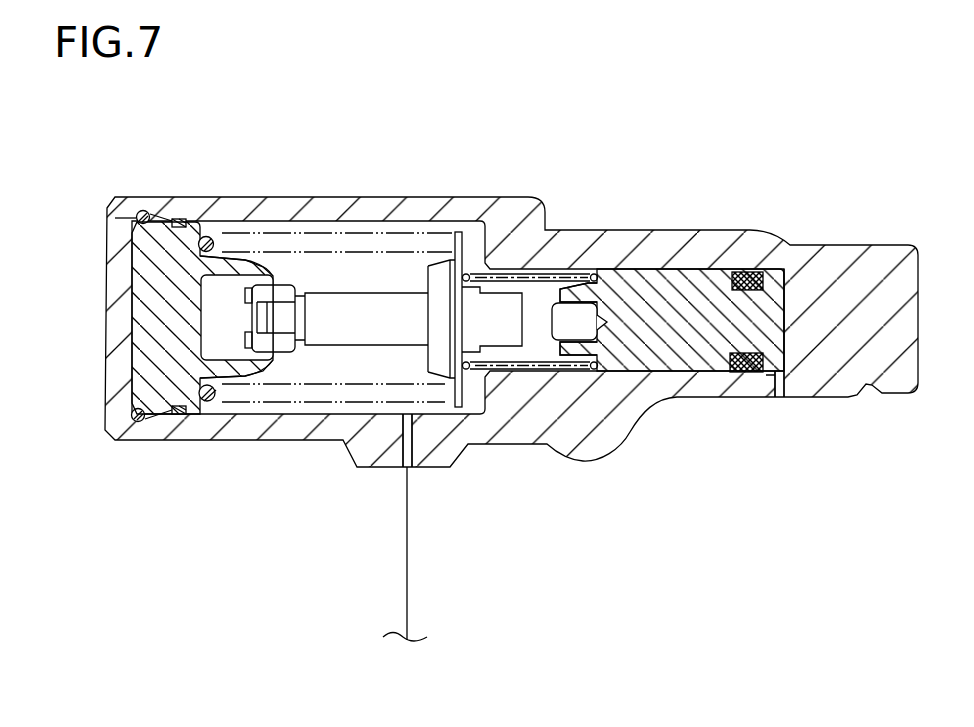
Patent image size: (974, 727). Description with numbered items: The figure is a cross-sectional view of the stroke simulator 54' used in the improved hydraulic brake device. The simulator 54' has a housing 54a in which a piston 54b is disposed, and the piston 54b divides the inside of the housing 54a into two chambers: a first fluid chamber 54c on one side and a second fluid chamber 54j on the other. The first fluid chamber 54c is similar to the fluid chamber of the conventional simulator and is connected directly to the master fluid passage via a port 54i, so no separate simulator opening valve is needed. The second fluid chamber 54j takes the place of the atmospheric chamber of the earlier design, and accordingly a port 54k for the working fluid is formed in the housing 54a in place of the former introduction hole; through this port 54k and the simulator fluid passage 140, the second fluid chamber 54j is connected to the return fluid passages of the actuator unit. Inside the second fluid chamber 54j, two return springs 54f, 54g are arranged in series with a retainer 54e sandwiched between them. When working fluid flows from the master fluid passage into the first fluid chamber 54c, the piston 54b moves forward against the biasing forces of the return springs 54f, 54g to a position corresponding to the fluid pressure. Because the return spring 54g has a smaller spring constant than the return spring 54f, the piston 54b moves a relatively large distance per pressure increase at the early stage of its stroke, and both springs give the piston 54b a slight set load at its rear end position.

The stroke simulator 54' is at (511, 275).
The housing 54a is at (583, 243).
The piston 54b is at (682, 280).
The first fluid chamber 54c is at (786, 324).
The retainer 54e is at (462, 262).
The return spring 54f is at (275, 250).
The return spring 54g is at (535, 280).
The port 54i is at (779, 385).
The second fluid chamber 54j is at (363, 273).
The port 54k is at (411, 468).
The simulator fluid passage 140 is at (410, 578).